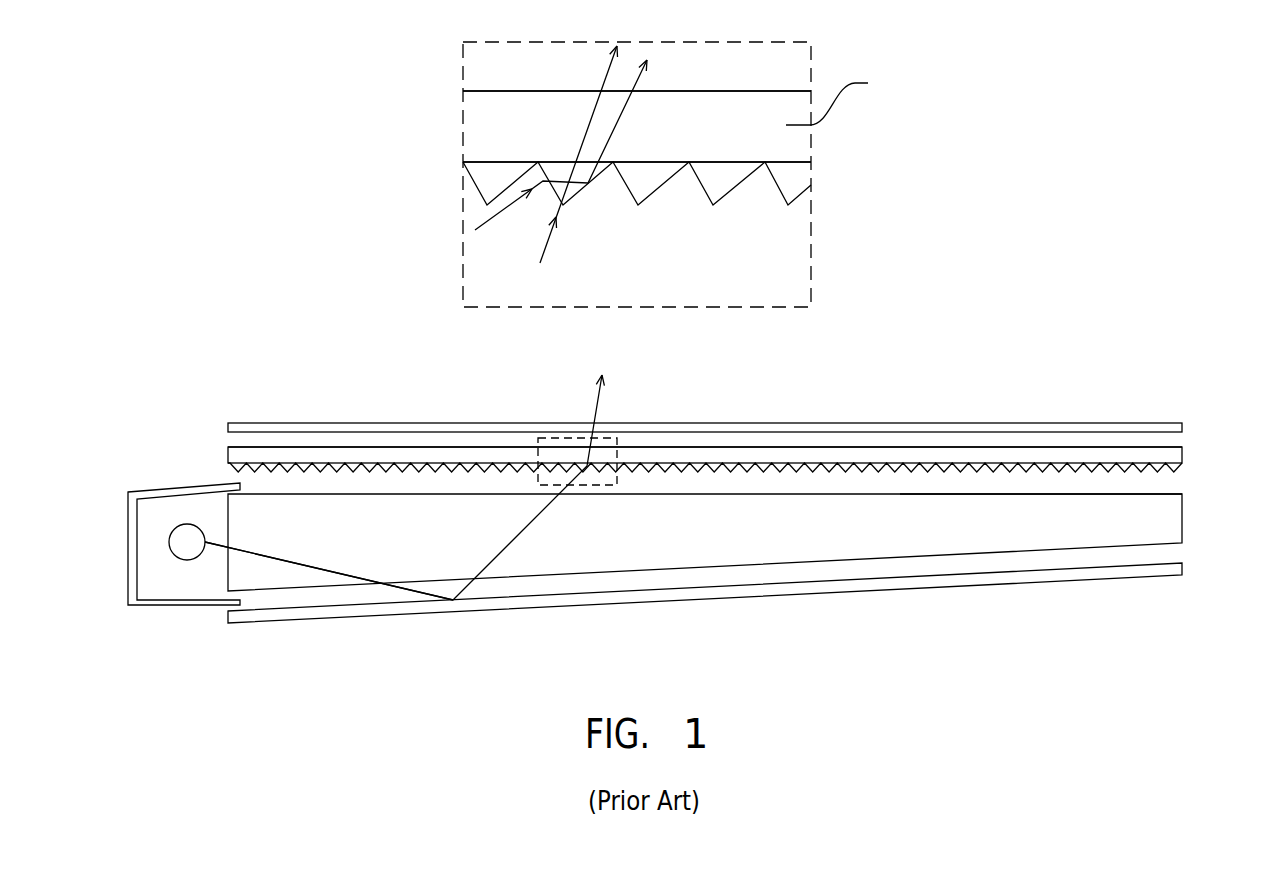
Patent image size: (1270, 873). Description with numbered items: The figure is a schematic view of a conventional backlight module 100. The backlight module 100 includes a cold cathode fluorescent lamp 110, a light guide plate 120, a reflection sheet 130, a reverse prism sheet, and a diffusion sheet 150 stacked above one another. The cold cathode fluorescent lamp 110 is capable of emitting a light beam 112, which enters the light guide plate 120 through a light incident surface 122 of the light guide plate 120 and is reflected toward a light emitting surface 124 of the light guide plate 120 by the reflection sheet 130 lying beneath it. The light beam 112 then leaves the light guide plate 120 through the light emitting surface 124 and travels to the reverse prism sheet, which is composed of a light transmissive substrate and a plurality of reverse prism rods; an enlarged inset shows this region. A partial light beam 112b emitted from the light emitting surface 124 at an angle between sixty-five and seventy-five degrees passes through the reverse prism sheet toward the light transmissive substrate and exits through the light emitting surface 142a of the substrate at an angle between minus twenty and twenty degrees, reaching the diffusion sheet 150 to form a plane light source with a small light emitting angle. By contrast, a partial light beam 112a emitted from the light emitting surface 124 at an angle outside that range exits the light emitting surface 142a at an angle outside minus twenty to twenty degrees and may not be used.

The backlight module 100 is at (1180, 665).
The cold cathode fluorescent lamp 110 is at (176, 533).
The light beam 112 is at (245, 552).
The partial light beam 112a is at (535, 266).
The partial light beam 112b is at (480, 233).
The light guide plate 120 is at (1162, 518).
The light incident surface 122 is at (227, 572).
The light emitting surface 124 is at (1163, 490).
The reflection sheet 130 is at (262, 612).
The light emitting surface 142a is at (968, 447).
The diffusion sheet 150 is at (1170, 424).